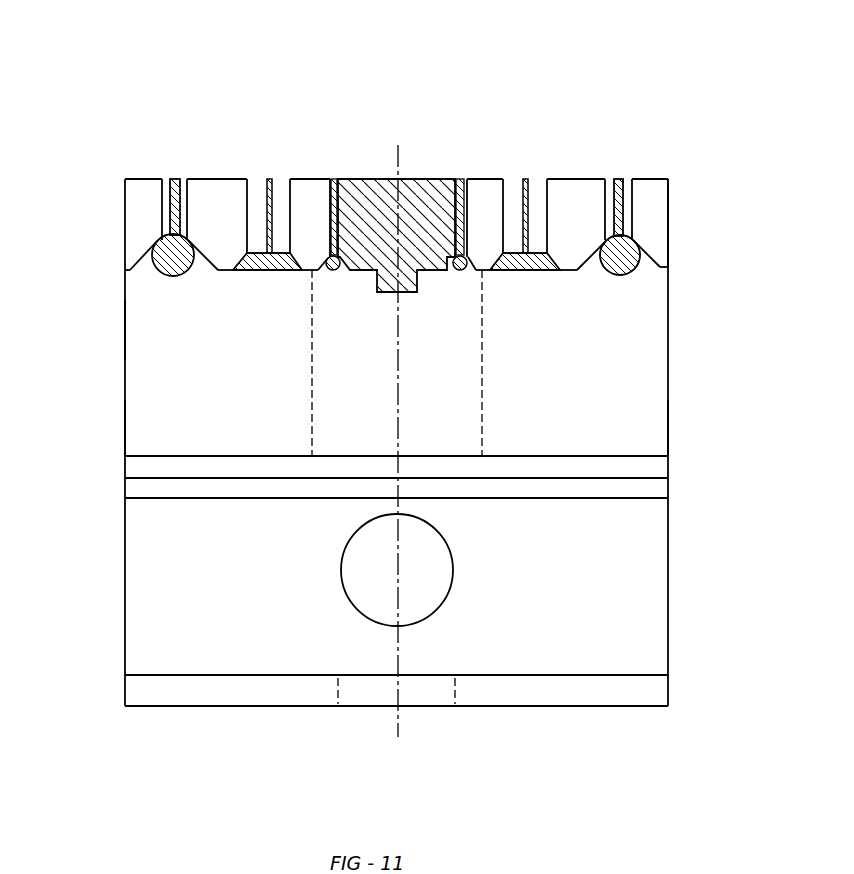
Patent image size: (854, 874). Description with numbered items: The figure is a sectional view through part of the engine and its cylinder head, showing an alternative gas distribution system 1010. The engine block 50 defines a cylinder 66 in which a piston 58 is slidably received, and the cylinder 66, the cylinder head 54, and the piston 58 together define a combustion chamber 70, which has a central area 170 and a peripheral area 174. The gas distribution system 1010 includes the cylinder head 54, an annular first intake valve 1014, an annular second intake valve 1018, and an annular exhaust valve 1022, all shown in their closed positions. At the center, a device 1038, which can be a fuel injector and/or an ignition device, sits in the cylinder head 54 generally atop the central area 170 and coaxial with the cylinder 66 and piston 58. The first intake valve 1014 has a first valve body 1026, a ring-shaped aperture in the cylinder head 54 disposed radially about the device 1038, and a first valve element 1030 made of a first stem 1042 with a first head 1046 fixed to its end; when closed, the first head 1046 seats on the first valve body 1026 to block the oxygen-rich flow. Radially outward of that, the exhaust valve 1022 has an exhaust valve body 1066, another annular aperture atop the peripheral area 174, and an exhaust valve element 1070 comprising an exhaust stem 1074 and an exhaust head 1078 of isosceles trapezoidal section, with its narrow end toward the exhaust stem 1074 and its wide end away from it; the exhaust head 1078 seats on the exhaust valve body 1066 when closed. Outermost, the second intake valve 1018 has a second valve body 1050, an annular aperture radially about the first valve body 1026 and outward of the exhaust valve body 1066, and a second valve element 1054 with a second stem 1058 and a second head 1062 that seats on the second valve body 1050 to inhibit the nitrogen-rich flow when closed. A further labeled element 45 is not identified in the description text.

The gas distribution system 1010 is at (677, 73).
The piston 58 is at (165, 588).
The engine block 50 is at (138, 688).
The cylinder 66 is at (126, 396).
The combustion chamber 70 is at (163, 333).
The peripheral area 174 is at (185, 418).
The central area 170 is at (445, 423).
The exhaust valve body 1066 is at (238, 262).
The exhaust valve element 1070 is at (240, 285).
The exhaust stem 1074 is at (265, 180).
The exhaust head 1078 is at (270, 272).
The exhaust valve 1022 is at (283, 167).
The device 1038 is at (378, 200).
The first stem 1042 is at (461, 178).
The first valve element 1030 is at (452, 277).
The first head 1046 is at (464, 272).
The first intake valve 1014 is at (470, 167).
The first valve body 1026 is at (478, 256).
The second hatched wedge insert 45 is at (576, 272).
The second intake valve 1018 is at (618, 175).
The second valve body 1050 is at (645, 250).
The second valve element 1054 is at (634, 292).
The second head 1062 is at (640, 270).
The second stem 1058 is at (625, 180).
The cylinder head 54 is at (660, 195).